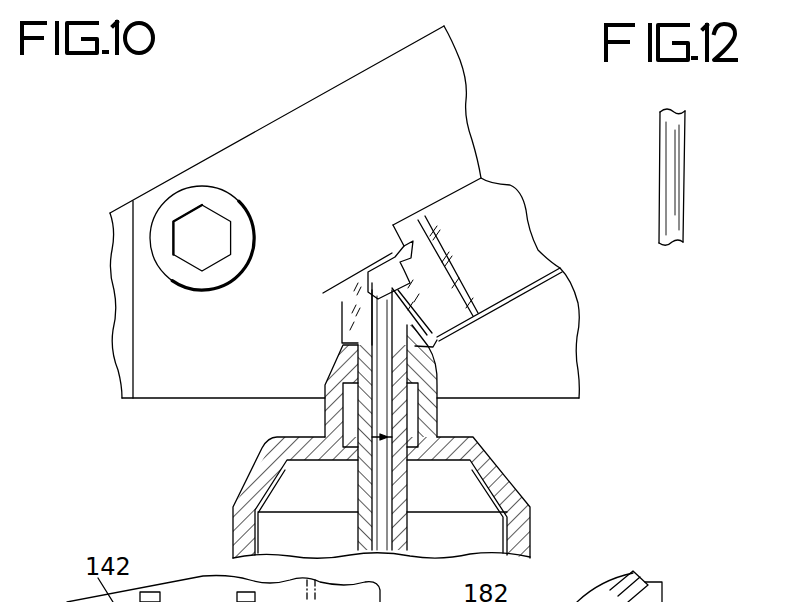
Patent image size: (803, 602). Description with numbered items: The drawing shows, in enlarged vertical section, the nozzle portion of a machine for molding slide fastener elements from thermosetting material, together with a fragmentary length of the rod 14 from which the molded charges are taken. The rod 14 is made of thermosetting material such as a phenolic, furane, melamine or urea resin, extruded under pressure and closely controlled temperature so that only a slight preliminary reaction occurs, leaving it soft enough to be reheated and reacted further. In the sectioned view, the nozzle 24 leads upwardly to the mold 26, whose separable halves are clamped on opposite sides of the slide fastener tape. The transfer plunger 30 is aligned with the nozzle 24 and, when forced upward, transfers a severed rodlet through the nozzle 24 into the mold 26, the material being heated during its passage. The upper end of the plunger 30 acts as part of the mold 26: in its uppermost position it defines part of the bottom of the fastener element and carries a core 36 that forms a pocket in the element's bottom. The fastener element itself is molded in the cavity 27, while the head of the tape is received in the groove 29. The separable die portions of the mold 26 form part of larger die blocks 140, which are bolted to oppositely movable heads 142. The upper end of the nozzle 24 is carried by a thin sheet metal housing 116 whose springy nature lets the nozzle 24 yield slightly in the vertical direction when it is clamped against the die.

In FIG. 10, the die block 140 is at (283, 130).
In FIG. 10, the oppositely movable head 142 is at (122, 218).
In FIG. 10, the mold 26 is at (408, 217).
In FIG. 10, the cavity 27 is at (368, 275).
In FIG. 10, the core 36 is at (374, 285).
In FIG. 10, the groove 29 is at (437, 337).
In FIG. 10, the transfer plunger 30 is at (380, 358).
In FIG. 10, the sheet metal housing 116 is at (515, 492).
In FIG. 10, the nozzle 24 is at (407, 500).
In FIG. 12, the rod 14 is at (672, 202).